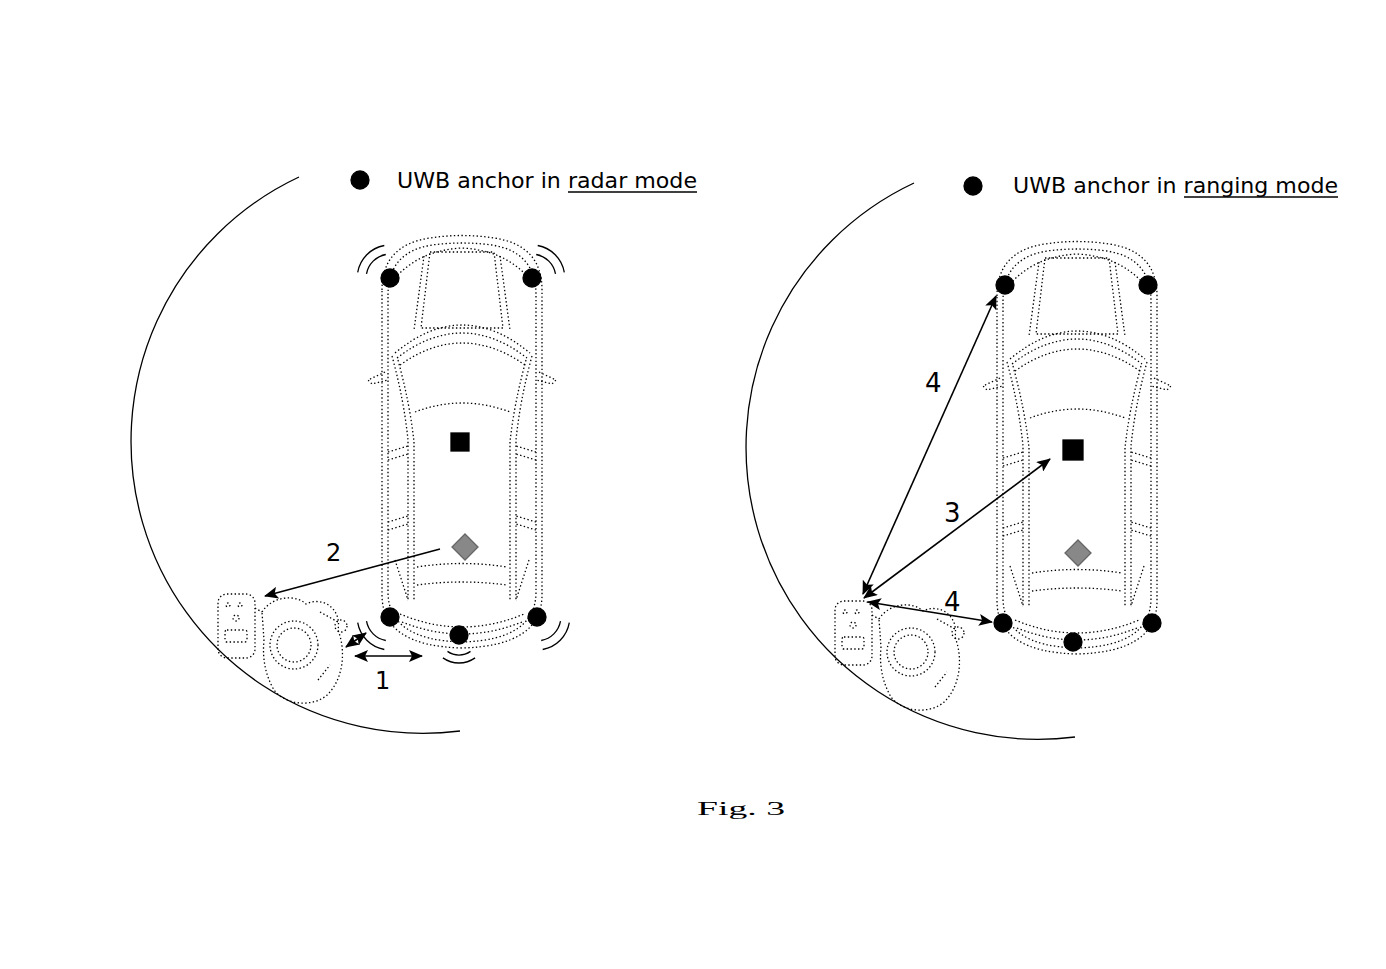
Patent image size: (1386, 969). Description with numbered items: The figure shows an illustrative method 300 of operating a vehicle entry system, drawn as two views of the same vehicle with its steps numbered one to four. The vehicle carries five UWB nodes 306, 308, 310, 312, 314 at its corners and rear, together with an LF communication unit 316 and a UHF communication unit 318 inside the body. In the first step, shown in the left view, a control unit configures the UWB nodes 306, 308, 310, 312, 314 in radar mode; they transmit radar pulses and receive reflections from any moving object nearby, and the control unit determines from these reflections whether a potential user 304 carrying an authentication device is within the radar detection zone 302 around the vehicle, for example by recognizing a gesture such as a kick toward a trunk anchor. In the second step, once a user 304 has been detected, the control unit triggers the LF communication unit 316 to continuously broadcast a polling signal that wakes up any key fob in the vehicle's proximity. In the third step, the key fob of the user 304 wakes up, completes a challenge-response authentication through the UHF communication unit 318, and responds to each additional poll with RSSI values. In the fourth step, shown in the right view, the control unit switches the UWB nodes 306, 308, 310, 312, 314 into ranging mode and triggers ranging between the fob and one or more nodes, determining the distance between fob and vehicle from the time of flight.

The method of operating an entry system 300 is at (748, 140).
The radar detection zone 302 is at (244, 367).
The user carrying an authentication device 304 is at (258, 602).
The UWB node 306 is at (386, 293).
The UWB node 308 is at (545, 292).
The UWB node 310 is at (548, 606).
The UWB node 312 is at (470, 645).
The UWB node 314 is at (385, 609).
The LF communication unit 316 is at (458, 538).
The UHF communication unit 318 is at (465, 454).